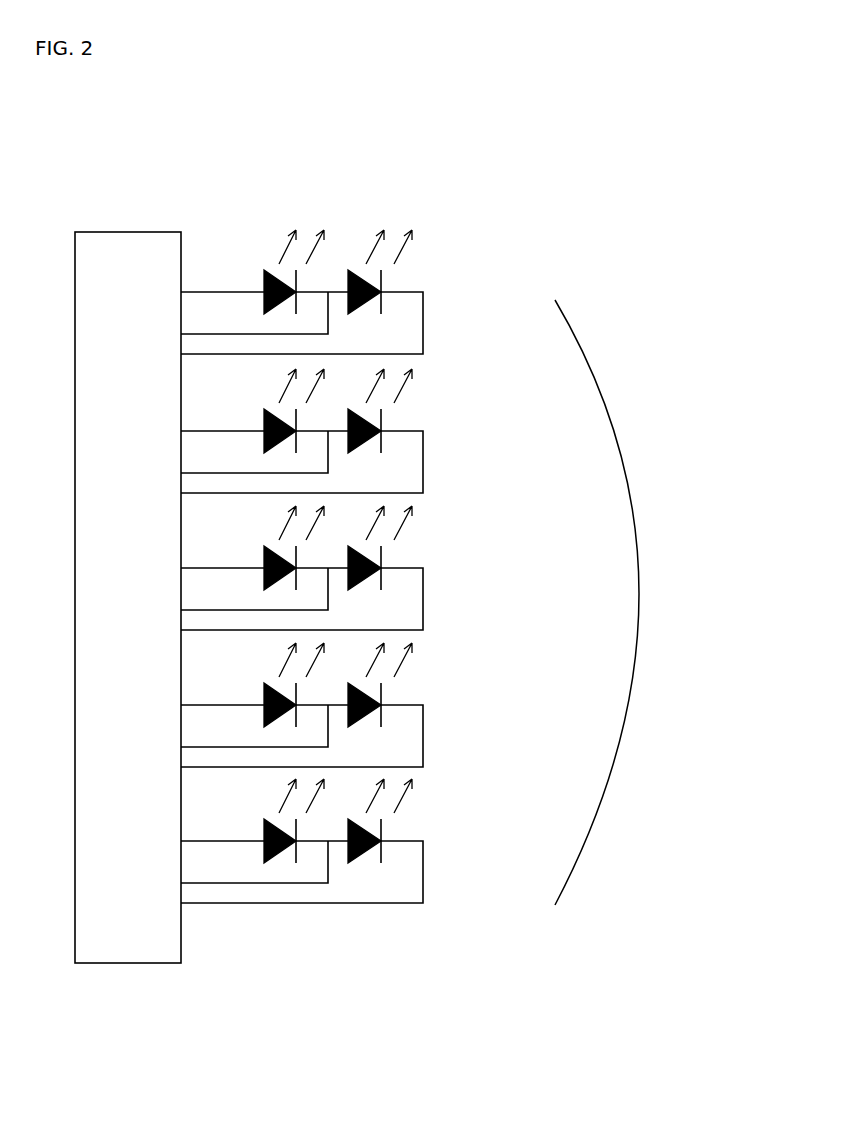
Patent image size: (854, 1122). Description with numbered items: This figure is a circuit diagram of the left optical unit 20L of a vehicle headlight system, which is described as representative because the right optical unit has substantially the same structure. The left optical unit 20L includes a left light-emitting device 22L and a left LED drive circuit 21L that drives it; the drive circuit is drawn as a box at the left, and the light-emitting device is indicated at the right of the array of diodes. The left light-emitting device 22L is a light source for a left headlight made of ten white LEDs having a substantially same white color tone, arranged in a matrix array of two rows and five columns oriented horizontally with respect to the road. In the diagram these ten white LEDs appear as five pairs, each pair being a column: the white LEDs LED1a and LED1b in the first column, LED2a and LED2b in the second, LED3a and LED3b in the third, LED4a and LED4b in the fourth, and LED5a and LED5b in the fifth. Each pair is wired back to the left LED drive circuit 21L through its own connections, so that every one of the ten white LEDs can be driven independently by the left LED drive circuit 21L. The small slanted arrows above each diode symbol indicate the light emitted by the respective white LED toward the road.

The left optical unit 20L is at (299, 181).
The left LED drive circuit 21L is at (123, 231).
The left light-emitting device 22L is at (639, 585).
The white LED LED1a is at (277, 272).
The white LED LED1b is at (418, 272).
The white LED LED2a is at (276, 411).
The white LED LED2b is at (411, 411).
The white LED LED3a is at (277, 548).
The white LED LED3b is at (411, 548).
The white LED LED4a is at (273, 685).
The white LED LED4b is at (411, 685).
The white LED LED5a is at (272, 821).
The white LED LED5b is at (410, 821).